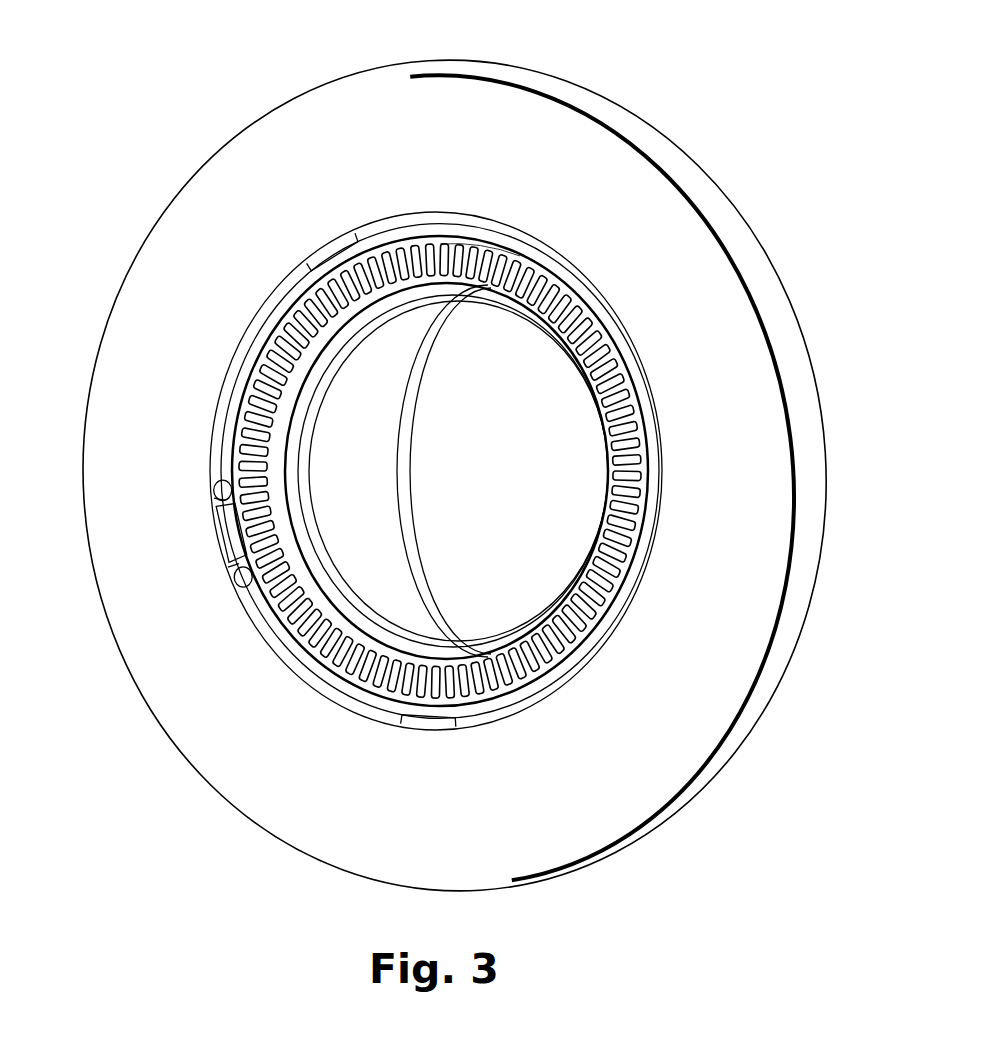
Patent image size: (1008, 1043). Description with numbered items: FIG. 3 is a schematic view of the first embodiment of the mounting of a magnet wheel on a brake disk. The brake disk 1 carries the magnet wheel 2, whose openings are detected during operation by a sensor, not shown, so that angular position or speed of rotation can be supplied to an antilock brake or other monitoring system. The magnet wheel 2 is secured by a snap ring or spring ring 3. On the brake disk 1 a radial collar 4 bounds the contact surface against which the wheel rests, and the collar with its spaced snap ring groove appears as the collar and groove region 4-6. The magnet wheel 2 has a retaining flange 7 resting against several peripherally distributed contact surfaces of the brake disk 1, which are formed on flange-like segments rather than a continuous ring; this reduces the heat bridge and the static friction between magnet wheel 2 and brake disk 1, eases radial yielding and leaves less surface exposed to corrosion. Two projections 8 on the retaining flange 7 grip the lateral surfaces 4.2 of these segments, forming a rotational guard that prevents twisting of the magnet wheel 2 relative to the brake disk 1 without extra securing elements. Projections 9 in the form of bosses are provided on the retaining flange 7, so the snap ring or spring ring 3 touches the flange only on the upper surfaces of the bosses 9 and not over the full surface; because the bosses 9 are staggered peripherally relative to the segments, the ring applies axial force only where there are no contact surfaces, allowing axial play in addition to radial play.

The brake disk 1 is at (622, 170).
The magnet wheel 2 is at (603, 330).
The snap ring or spring ring 3 is at (383, 233).
The radial collar 4 is at (291, 240).
The lateral surfaces 4.2 is at (217, 499).
The fastening element 4-6 is at (220, 530).
The retaining flange 7 is at (326, 667).
The projections 8 is at (215, 484).
The projections (bosses) 9 is at (508, 242).